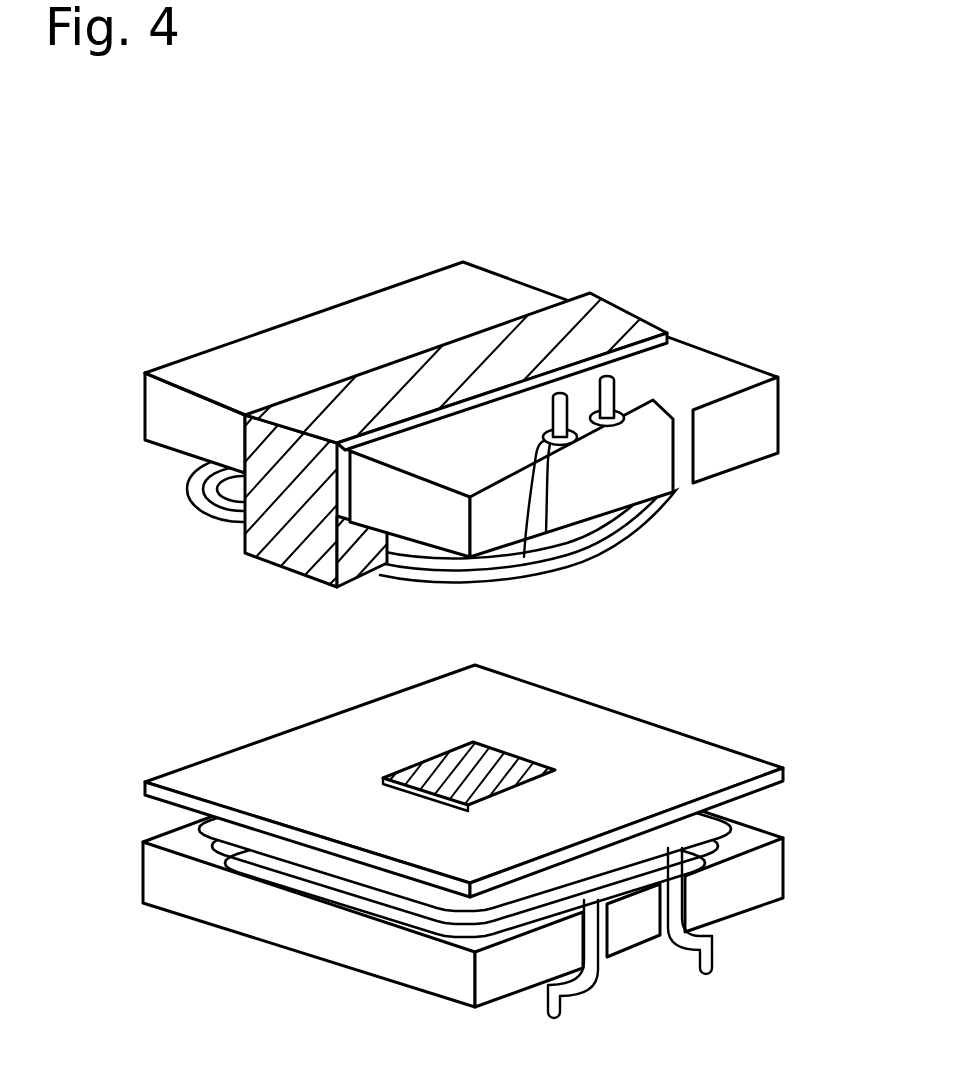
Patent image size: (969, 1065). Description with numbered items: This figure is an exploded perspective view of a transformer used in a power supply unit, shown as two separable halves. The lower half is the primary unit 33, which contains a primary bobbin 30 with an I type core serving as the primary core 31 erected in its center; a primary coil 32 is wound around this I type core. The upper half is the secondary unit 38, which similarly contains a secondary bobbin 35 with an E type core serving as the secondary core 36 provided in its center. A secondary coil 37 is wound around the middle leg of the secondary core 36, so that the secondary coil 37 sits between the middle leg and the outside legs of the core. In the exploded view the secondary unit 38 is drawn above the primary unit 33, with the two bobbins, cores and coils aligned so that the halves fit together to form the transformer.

The primary bobbin 30 is at (193, 908).
The primary core 31 is at (525, 757).
The primary coil 32 is at (387, 905).
The primary unit 33 is at (762, 915).
The secondary bobbin 35 is at (153, 398).
The secondary core 36 is at (620, 308).
The secondary coil 37 is at (637, 522).
The secondary unit 38 is at (300, 318).